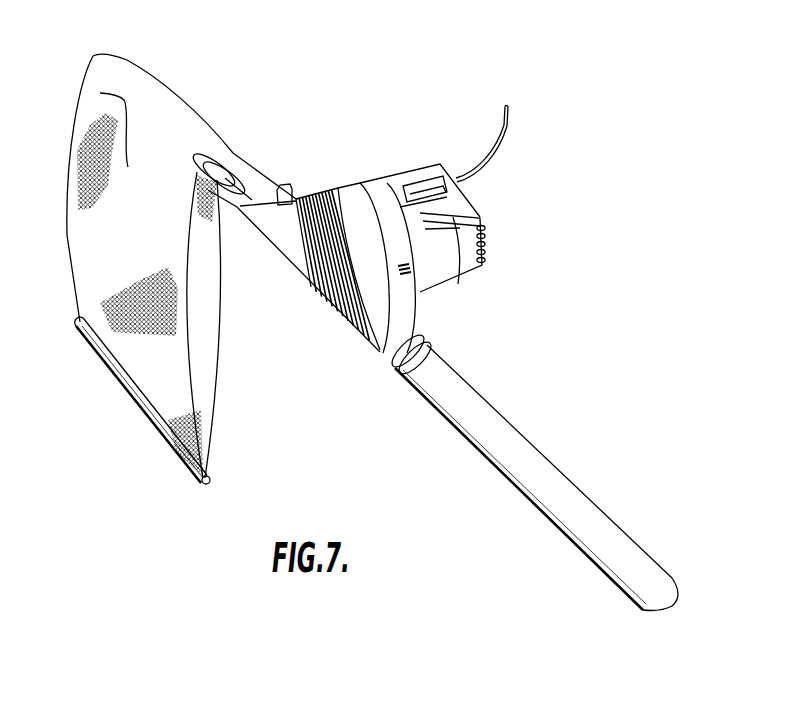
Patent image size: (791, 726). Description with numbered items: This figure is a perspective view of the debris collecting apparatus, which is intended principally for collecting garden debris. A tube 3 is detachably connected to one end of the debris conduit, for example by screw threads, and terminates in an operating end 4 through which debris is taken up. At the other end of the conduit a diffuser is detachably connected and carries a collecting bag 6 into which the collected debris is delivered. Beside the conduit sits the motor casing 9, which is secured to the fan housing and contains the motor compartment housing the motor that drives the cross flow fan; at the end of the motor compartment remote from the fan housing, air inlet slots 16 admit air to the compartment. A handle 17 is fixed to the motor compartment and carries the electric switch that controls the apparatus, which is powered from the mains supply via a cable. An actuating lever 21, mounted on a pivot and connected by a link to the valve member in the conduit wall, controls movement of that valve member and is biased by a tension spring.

The tube 3 is at (548, 474).
The operating end 4 is at (640, 608).
The collecting bag 6 is at (208, 364).
The motor casing 9 is at (443, 266).
The air inlet slots 16 is at (484, 236).
The handle 17 is at (412, 172).
The actuating lever 21 is at (282, 190).